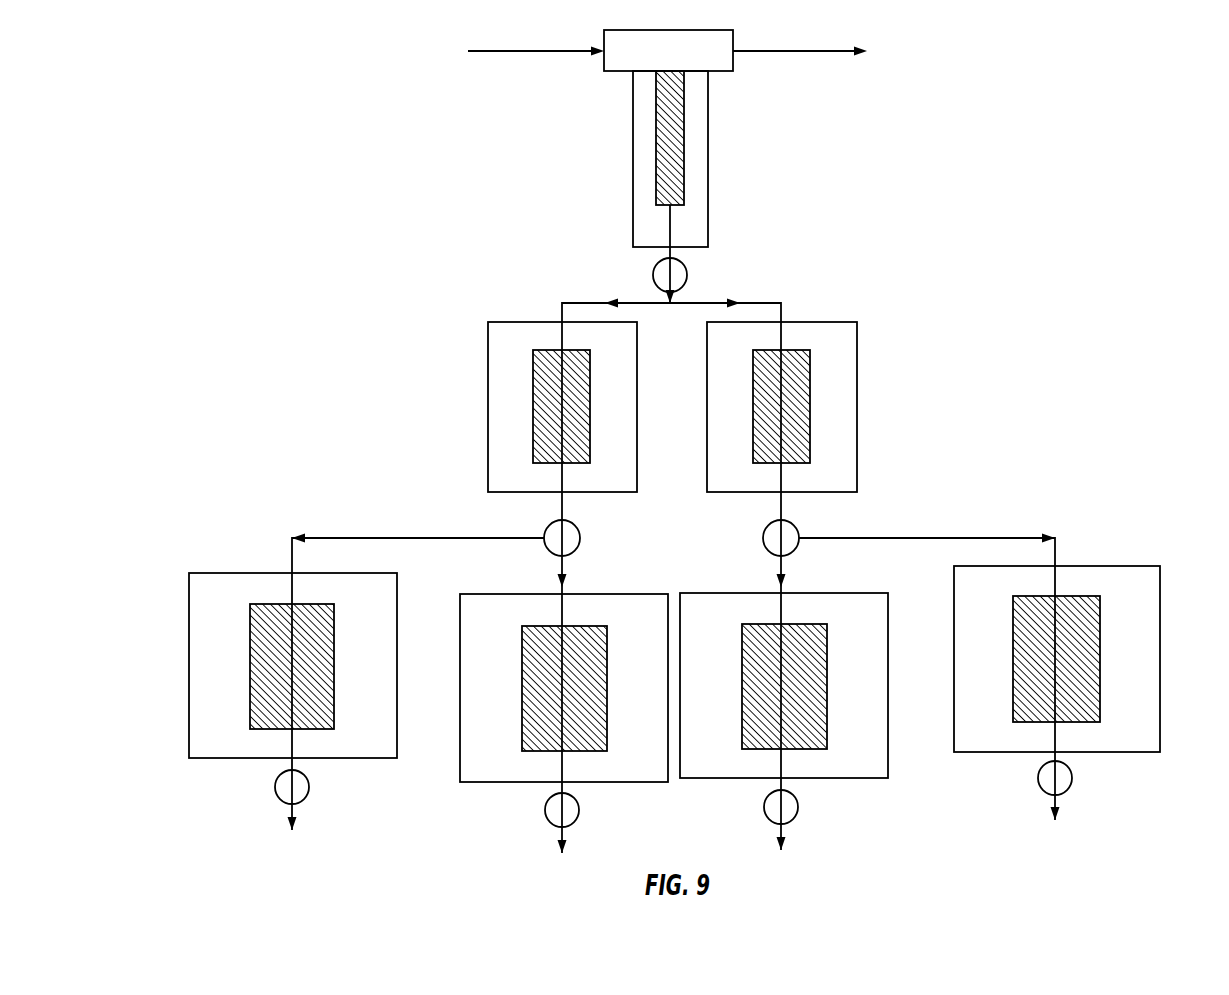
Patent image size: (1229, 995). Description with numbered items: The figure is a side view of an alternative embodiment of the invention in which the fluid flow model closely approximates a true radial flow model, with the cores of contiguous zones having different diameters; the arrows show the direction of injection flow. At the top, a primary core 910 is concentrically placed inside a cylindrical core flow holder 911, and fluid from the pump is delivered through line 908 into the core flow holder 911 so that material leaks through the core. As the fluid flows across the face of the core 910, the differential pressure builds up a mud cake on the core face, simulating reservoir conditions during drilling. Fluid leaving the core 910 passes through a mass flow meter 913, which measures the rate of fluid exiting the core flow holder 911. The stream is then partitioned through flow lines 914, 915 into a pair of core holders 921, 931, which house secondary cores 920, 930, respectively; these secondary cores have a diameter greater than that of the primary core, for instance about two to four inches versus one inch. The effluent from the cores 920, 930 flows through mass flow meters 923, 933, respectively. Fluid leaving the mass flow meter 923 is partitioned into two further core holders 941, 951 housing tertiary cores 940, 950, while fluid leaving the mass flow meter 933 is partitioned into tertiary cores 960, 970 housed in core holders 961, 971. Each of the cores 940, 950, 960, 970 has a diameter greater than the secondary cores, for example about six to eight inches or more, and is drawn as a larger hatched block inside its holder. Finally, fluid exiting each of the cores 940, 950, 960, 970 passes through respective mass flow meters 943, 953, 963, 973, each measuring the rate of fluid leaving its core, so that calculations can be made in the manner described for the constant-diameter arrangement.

The line 908 is at (522, 53).
The core 910 is at (662, 187).
The core flow holder 911 is at (642, 113).
The mass flow meter 913 is at (662, 277).
The flow line 914 is at (583, 302).
The flow line 915 is at (777, 302).
The core 920 is at (537, 445).
The core holder 921 is at (502, 373).
The mass flow meter 923 is at (572, 540).
The core 930 is at (807, 445).
The core holder 931 is at (840, 373).
The mass flow meter 933 is at (772, 540).
The core 940 is at (272, 689).
The core holder 941 is at (212, 633).
The mass flow meter 943 is at (287, 775).
The core 950 is at (542, 705).
The core holder 951 is at (475, 635).
The mass flow meter 953 is at (557, 800).
The core 960 is at (807, 708).
The core holder 961 is at (872, 632).
The mass flow meter 963 is at (797, 797).
The core 970 is at (1078, 685).
The core holder 971 is at (1138, 625).
The mass flow meter 973 is at (1065, 768).